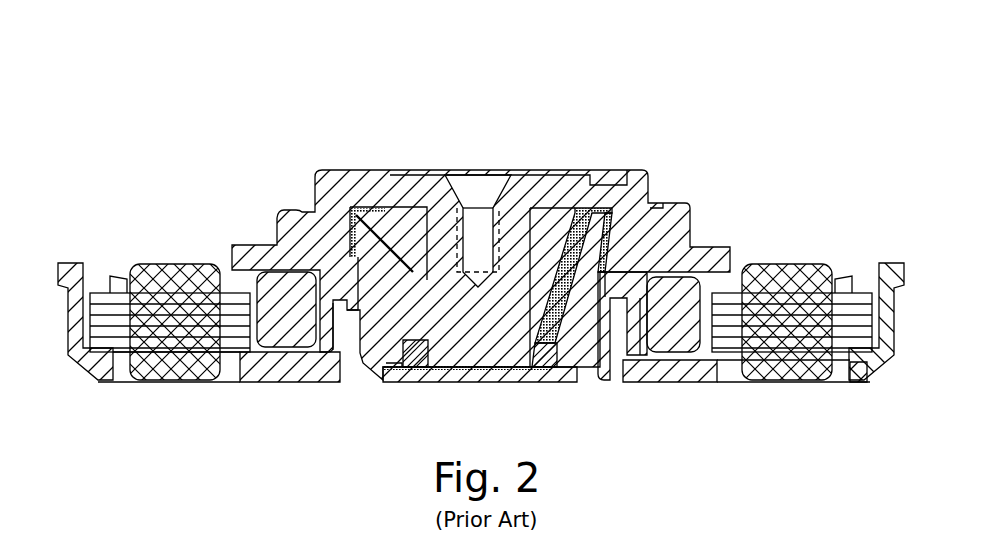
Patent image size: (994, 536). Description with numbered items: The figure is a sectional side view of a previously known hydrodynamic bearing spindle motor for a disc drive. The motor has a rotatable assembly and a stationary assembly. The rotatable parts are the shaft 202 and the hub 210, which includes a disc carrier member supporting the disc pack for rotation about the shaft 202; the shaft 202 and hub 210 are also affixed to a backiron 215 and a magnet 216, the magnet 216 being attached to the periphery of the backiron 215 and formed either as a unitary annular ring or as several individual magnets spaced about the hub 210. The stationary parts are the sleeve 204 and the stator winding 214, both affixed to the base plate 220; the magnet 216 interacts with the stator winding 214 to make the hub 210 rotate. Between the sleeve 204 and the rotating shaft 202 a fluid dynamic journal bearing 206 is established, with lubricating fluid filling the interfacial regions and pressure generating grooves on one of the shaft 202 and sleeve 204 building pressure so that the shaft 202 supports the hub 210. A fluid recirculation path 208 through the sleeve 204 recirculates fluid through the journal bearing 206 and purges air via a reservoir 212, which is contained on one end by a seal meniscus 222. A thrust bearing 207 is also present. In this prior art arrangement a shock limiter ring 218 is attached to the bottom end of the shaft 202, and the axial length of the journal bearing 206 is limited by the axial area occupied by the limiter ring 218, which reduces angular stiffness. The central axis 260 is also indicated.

The shaft 202 is at (443, 250).
The sleeve 204 is at (550, 240).
The journal bearing 206 is at (512, 248).
The thrust bearing 207 is at (548, 215).
The fluid recirculation path 208 is at (583, 190).
The hub 210 is at (677, 230).
The reservoir 212 is at (615, 250).
The stator winding 214 is at (170, 333).
The backiron 215 is at (323, 310).
The magnet 216 is at (287, 327).
The shock limiter ring 218 is at (402, 367).
The base plate 220 is at (660, 380).
The seal meniscus 222 is at (722, 272).
The central axis 260 is at (478, 398).